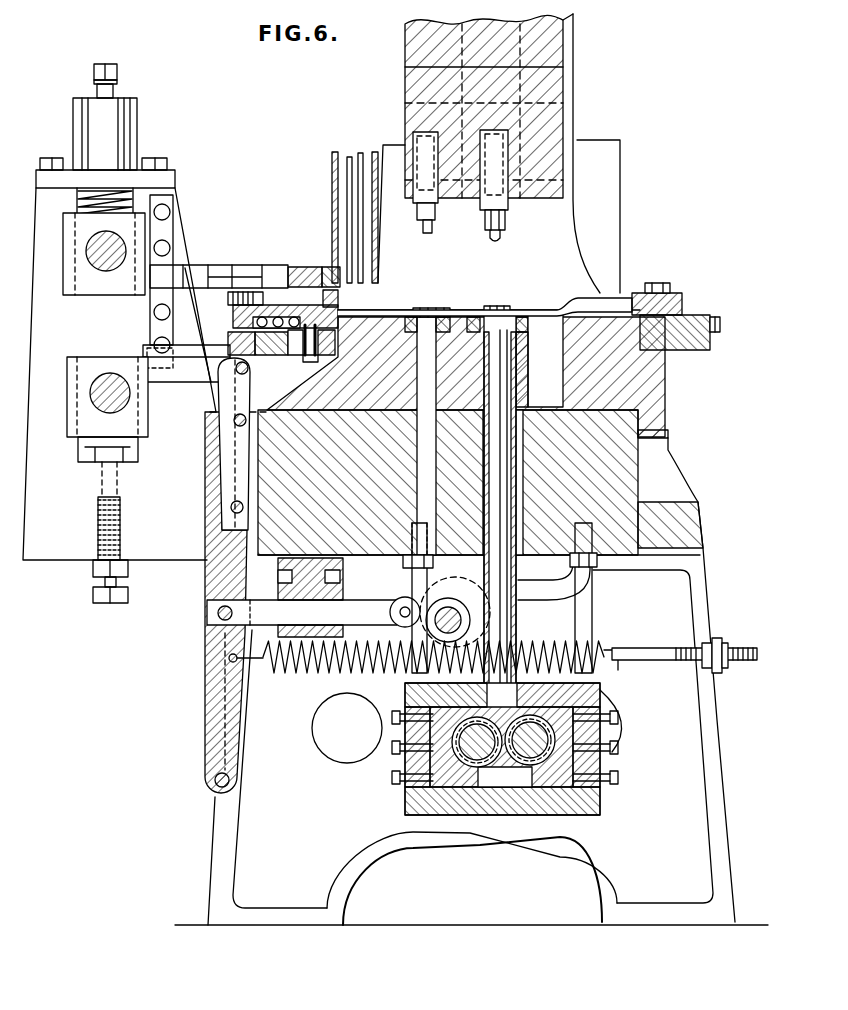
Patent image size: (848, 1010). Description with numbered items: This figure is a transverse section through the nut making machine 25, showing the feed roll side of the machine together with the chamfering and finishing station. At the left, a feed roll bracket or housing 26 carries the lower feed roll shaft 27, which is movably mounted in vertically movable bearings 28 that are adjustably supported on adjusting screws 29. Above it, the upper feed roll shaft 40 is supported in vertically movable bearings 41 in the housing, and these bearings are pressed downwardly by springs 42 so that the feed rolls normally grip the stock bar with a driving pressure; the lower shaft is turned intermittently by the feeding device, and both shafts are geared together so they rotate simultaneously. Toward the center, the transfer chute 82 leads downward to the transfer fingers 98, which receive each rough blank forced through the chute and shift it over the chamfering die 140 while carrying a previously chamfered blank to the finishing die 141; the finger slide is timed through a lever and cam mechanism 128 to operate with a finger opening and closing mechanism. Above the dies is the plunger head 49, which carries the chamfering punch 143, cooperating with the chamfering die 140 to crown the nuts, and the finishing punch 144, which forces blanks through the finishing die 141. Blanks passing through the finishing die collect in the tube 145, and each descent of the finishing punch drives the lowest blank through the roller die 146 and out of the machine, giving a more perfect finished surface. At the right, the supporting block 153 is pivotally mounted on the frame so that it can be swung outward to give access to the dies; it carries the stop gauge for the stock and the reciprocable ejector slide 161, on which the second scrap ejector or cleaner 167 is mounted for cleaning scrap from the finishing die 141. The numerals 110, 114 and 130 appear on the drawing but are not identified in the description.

The machine 25 is at (668, 522).
The feed roll brackets or housings 26 is at (53, 548).
The lower feed roll shaft 27 is at (90, 400).
The vertically movable bearings 28 is at (80, 375).
The adjusting screws 29 is at (123, 582).
The upper feed roll shaft 40 is at (125, 247).
The vertically movable bearings 41 is at (133, 228).
The springs 42 is at (140, 192).
The plunger head 49 is at (543, 43).
The transfer chute 82 is at (332, 180).
The transfer fingers 98 is at (398, 306).
The valve mechanism 110 is at (338, 293).
The arm 114 is at (270, 272).
The lever and cam mechanism 128 is at (205, 685).
The spring 130 is at (278, 718).
The chamfering die 140 is at (457, 297).
The finishing die 141 is at (515, 312).
The chamfering punch 143 is at (438, 212).
The finishing punch 144 is at (510, 210).
The tube 145 is at (530, 450).
The roller die 146 is at (595, 690).
The supporting block 153 is at (700, 350).
The ejector slide 161 is at (687, 297).
The second scrap ejector or cleaner 167 is at (548, 293).